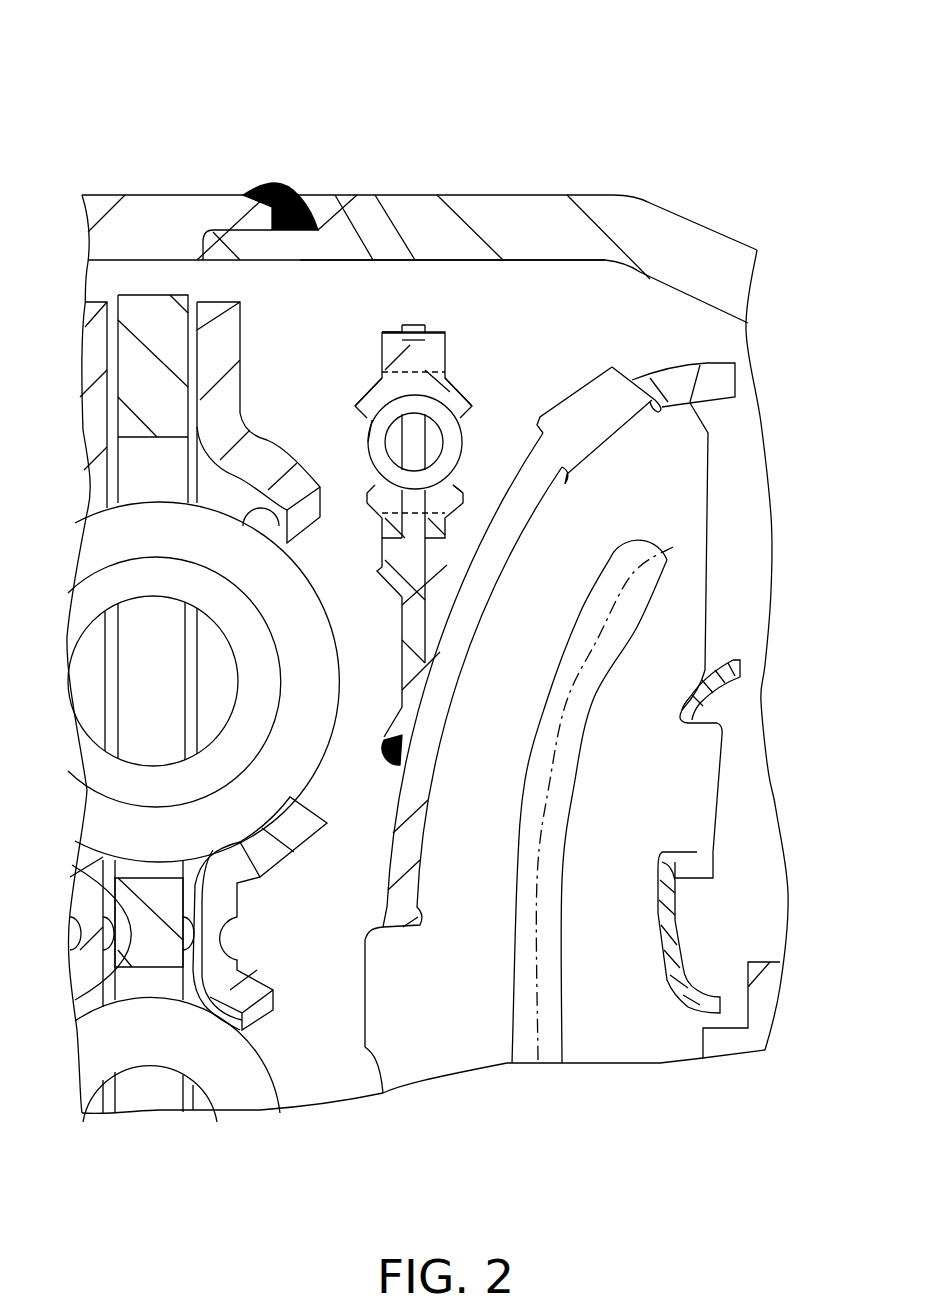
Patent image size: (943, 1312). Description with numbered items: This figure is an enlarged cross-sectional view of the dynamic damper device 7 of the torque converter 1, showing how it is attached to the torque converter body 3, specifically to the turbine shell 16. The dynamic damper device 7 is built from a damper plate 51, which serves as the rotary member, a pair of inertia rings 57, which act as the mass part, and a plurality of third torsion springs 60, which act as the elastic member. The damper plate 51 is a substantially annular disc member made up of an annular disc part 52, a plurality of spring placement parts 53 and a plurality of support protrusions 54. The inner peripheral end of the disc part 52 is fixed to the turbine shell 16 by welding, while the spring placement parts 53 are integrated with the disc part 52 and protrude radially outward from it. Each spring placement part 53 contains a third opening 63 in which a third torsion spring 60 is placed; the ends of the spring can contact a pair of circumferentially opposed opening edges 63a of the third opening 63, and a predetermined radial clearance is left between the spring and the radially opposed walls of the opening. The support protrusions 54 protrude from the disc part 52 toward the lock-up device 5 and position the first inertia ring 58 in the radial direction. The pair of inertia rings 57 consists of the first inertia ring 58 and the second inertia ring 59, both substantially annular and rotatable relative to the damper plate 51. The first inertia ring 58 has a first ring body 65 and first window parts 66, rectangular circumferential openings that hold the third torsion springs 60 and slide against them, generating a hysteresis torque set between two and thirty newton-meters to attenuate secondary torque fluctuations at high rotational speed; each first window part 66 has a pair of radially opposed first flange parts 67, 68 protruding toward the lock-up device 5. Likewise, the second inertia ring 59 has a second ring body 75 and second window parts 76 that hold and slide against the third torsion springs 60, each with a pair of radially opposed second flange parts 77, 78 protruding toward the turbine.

The torque converter 1 is at (723, 88).
The torque converter body 3 is at (730, 222).
The lock-up device 5 is at (153, 283).
The dynamic damper device 7 is at (465, 292).
The turbine shell 16 is at (450, 613).
The damper plate 51 is at (388, 708).
The disc part 52 is at (410, 613).
The spring placement part 53 is at (410, 349).
The support protrusion 54 is at (398, 557).
The inertia rings 57 is at (443, 82).
The first inertia ring 58 is at (392, 325).
The second inertia ring 59 is at (438, 325).
The third torsion spring 60 is at (498, 428).
The third opening 63 is at (413, 500).
The opening edges 63a is at (412, 438).
The first ring body 65 is at (383, 332).
The first window part 66 is at (362, 421).
The first flange part 67 is at (375, 395).
The first flange part 68 is at (383, 492).
The second ring body 75 is at (447, 327).
The second window part 76 is at (465, 416).
The second flange part 77 is at (452, 387).
The second flange part 78 is at (460, 504).